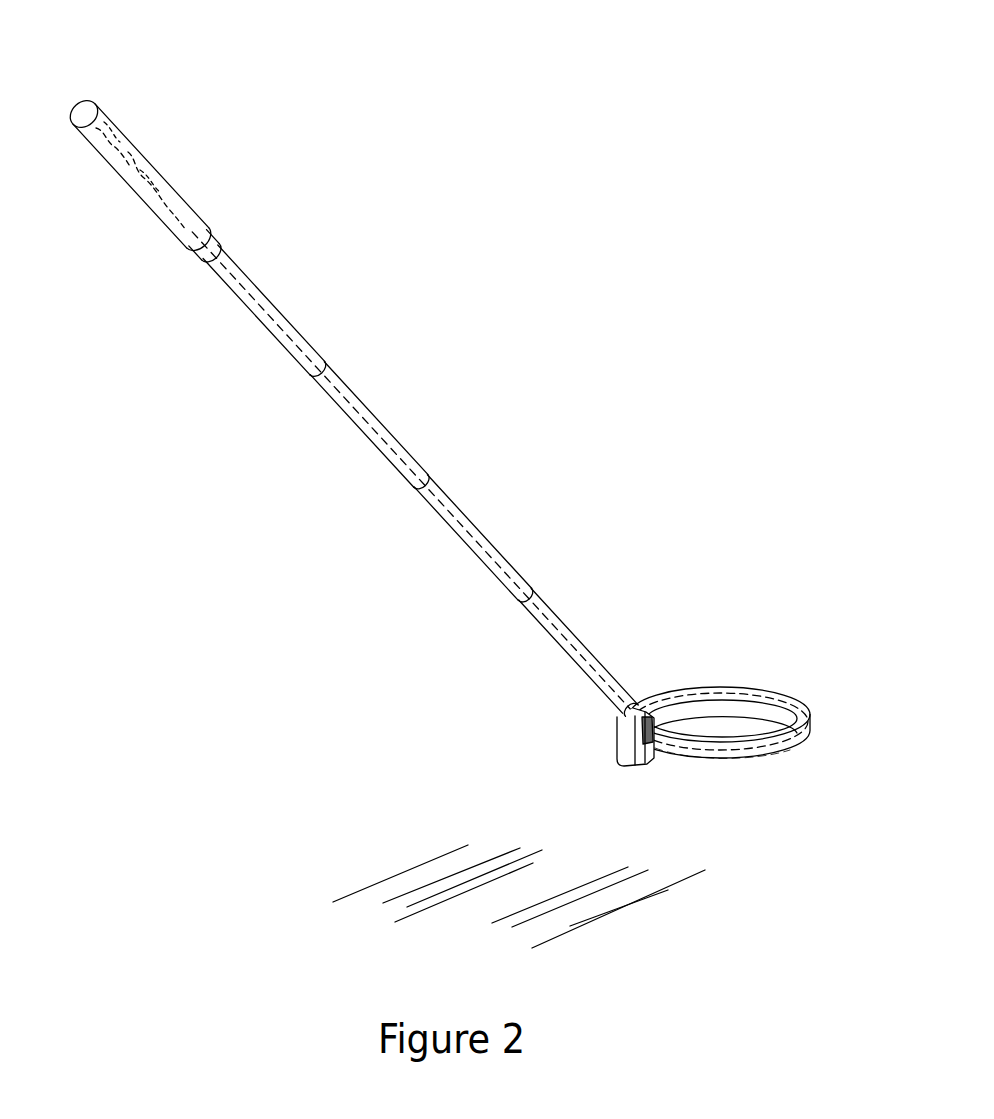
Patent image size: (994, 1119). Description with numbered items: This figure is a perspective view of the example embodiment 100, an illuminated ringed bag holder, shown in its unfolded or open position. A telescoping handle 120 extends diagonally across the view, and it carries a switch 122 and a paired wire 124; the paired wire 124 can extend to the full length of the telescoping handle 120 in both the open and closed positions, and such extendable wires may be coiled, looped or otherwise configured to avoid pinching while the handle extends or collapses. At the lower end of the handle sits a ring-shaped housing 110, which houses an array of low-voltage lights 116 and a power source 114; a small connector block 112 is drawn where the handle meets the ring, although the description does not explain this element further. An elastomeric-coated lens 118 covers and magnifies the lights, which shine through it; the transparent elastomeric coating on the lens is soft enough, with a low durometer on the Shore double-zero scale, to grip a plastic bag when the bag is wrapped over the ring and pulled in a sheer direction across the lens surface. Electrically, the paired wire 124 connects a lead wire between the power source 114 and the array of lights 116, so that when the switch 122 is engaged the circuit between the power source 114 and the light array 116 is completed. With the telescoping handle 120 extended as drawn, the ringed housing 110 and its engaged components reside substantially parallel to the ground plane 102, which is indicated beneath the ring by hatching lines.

The example embodiment 100 is at (681, 57).
The ground plane 102 is at (357, 836).
The ring-shaped housing 110 is at (728, 712).
The connector block 112 is at (626, 744).
The power source 114 is at (109, 137).
The array of low-voltage lights 116 is at (698, 754).
The elastomeric-coated lens 118 is at (769, 690).
The telescoping handle 120 is at (172, 199).
The switch 122 is at (186, 201).
The paired wire 124 is at (375, 435).